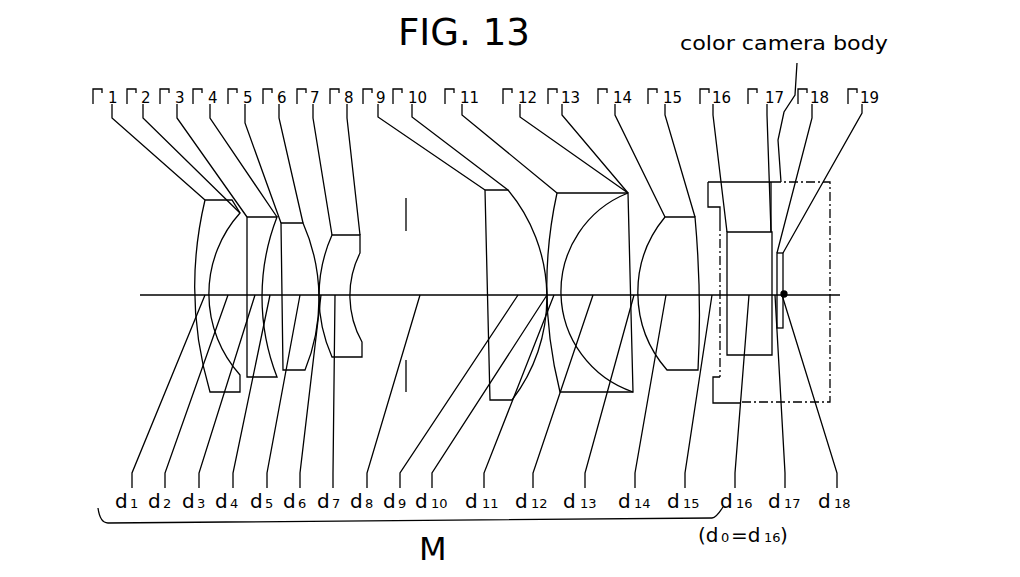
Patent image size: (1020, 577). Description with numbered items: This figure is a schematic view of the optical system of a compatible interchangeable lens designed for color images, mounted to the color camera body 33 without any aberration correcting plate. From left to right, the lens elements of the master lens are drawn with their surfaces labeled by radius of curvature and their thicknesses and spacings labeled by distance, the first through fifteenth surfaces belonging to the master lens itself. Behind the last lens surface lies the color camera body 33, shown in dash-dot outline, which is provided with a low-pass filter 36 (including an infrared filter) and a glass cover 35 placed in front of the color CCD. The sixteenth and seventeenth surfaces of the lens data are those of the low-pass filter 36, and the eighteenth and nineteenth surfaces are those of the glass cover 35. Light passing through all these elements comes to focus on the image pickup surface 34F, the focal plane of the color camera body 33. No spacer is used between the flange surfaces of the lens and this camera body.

The color camera body 33 is at (818, 352).
The image pickup surface 34F is at (786, 292).
The glass cover 35 is at (786, 254).
The low-pass filter 36 is at (733, 343).